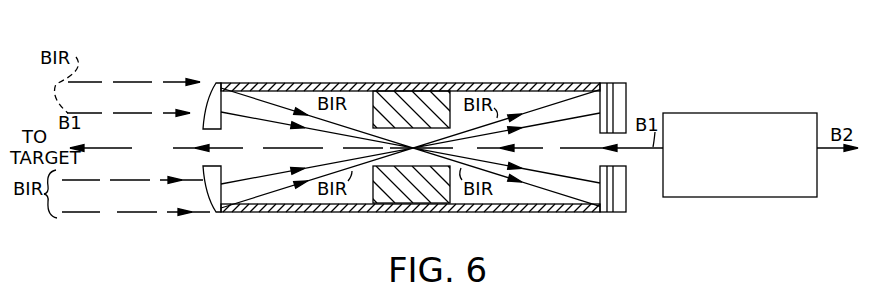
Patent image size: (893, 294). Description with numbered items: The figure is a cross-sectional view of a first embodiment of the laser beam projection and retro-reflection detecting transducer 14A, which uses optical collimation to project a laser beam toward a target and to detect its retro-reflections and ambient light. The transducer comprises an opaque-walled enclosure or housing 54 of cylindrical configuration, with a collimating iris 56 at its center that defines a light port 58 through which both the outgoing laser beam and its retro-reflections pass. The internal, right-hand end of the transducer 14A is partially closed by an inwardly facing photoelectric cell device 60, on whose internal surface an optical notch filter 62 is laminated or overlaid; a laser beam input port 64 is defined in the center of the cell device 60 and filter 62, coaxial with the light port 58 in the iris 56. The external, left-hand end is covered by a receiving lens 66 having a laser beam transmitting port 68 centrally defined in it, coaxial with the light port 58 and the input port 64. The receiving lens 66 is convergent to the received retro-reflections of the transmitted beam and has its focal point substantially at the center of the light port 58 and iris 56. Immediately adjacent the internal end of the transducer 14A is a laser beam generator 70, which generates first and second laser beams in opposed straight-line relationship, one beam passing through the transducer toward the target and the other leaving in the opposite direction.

The laser beam projection and retro-reflection detecting transducer 14A is at (265, 41).
The opaque-walled enclosure or housing 54 is at (503, 86).
The collimating iris 56 is at (402, 103).
The light port 58 is at (450, 136).
The photoelectric cell device 60 is at (620, 92).
The optical notch filter 62 is at (606, 83).
The laser beam input port 64 is at (622, 158).
The receiving lens 66 is at (228, 91).
The laser beam transmitting port 68 is at (192, 161).
The laser beam generator 70 is at (765, 197).